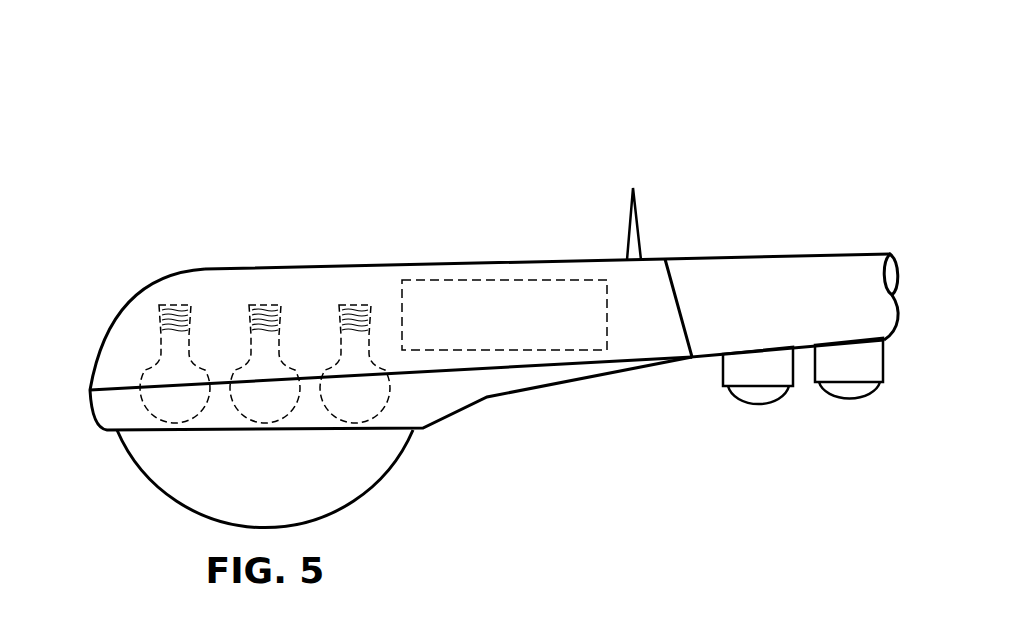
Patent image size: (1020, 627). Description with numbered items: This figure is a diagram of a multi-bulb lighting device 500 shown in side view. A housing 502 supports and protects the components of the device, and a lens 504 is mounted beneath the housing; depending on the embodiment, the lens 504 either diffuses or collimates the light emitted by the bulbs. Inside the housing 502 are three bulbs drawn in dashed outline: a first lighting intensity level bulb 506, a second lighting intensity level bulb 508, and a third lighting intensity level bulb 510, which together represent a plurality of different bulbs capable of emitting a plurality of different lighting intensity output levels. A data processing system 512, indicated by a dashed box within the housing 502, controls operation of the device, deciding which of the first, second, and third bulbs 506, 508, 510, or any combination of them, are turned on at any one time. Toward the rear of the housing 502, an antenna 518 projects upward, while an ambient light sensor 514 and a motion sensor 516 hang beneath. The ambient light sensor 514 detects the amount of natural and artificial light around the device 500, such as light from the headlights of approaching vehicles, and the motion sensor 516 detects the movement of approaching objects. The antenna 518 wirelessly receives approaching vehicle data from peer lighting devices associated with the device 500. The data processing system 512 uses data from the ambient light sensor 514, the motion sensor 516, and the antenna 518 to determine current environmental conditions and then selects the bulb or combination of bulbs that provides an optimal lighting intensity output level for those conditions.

The multi-bulb lighting device 500 is at (792, 126).
The housing 502 is at (458, 412).
The lens 504 is at (152, 481).
The first lighting intensity level bulb 506 is at (161, 306).
The second lighting intensity level bulb 508 is at (262, 303).
The third lighting intensity level bulb 510 is at (356, 303).
The data processing system 512 is at (512, 279).
The ambient light sensor 514 is at (850, 402).
The motion sensor 516 is at (758, 408).
The antenna 518 is at (640, 210).